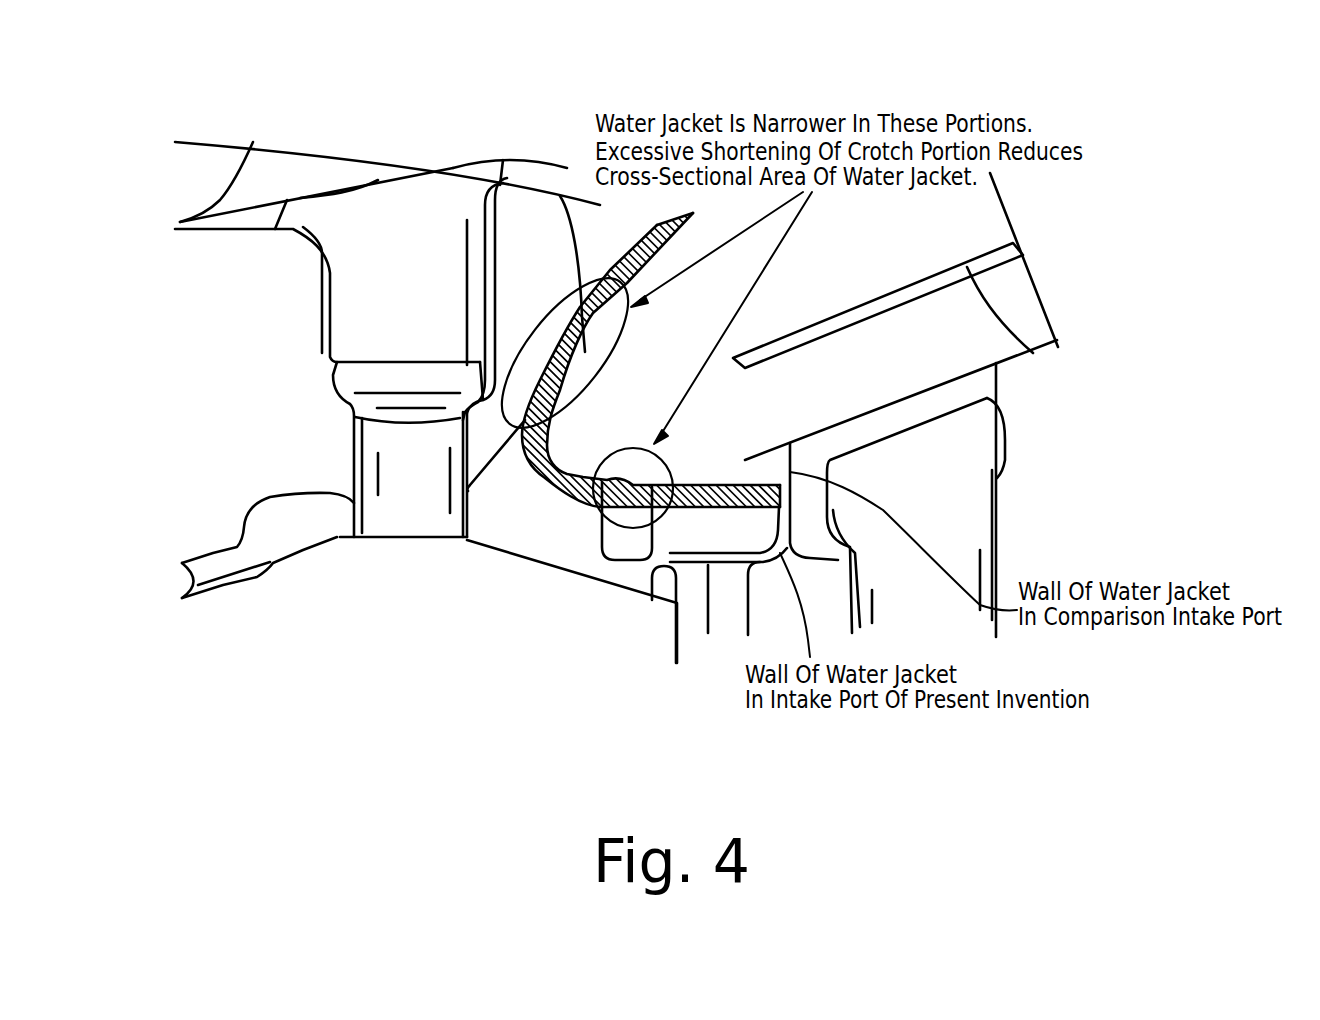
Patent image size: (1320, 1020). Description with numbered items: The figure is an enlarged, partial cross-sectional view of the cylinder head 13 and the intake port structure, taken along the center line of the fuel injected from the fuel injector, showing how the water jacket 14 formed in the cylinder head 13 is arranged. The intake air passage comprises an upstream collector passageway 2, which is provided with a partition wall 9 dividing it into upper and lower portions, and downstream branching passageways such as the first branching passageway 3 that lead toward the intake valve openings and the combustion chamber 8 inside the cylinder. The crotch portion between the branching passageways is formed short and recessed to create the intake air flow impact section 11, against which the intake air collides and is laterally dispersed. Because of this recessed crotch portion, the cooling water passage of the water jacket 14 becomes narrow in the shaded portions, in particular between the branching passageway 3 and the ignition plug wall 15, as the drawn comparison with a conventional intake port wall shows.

The collector passageway 2 is at (927, 407).
The first branching passageway 3 is at (603, 455).
The combustion chamber 8 is at (367, 615).
The partition wall 9 is at (1058, 347).
The intake air flow impact section 11 is at (697, 487).
The cylinder head 13 is at (305, 163).
The water jacket 14 is at (520, 250).
The ignition plug wall 15 is at (355, 422).